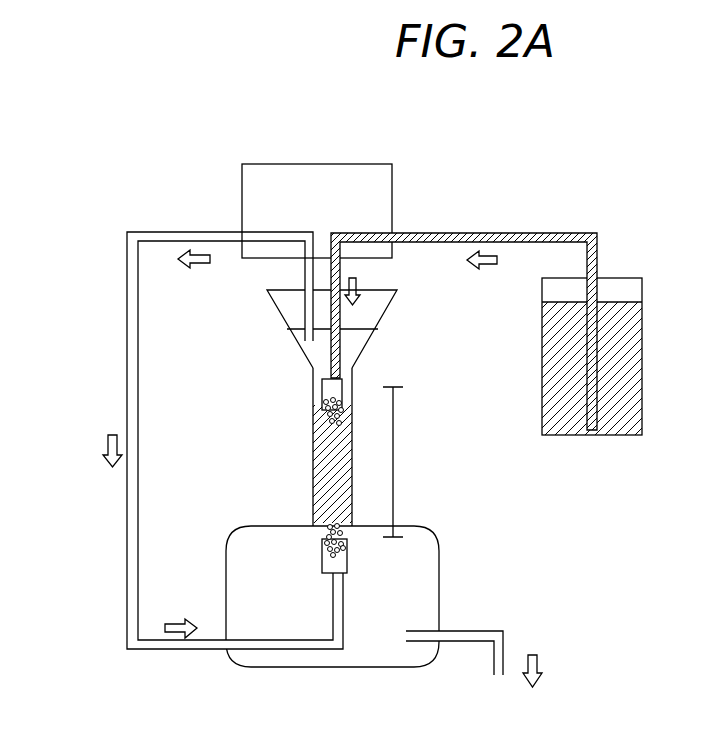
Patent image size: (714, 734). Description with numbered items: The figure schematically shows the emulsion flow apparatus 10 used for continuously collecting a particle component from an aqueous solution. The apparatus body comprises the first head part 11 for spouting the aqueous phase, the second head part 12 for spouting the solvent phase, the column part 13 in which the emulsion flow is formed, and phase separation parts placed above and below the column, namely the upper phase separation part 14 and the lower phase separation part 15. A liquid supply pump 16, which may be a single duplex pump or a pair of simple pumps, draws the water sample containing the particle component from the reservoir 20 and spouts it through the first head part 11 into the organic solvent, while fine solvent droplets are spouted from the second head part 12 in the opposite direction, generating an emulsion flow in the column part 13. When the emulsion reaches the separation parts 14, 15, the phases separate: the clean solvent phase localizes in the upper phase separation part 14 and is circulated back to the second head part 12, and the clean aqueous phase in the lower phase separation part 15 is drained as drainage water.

The emulsion flow apparatus 10 is at (480, 198).
The first head part 11 is at (322, 396).
The second head part 12 is at (322, 547).
The column part 13 is at (313, 462).
The upper phase separation part 14 is at (378, 321).
The lower phase separation part 15 is at (439, 587).
The liquid supply pump 16 is at (360, 164).
The reservoir 20 is at (642, 363).